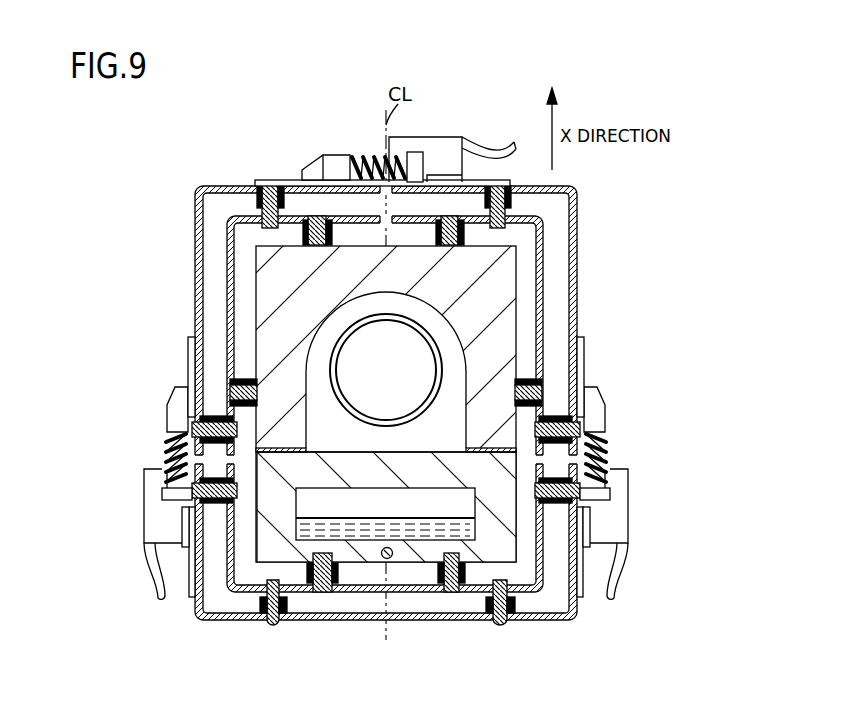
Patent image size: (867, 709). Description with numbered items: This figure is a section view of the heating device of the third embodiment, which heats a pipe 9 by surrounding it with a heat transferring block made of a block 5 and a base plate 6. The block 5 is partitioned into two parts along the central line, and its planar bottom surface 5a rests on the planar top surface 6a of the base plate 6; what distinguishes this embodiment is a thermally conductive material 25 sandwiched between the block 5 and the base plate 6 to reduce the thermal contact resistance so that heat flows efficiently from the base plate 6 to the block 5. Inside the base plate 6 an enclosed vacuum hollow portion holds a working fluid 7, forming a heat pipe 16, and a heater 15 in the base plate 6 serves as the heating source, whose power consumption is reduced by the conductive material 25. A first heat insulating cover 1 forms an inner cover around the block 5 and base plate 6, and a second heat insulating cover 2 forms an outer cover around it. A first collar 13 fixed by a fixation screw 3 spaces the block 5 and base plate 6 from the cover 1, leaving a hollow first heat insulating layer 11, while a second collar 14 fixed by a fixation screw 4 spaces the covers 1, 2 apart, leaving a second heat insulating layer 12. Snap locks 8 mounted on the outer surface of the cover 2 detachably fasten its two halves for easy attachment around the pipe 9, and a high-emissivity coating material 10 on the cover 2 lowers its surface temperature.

The first heat insulating cover 1 is at (227, 238).
The second heat insulating cover 2 is at (195, 198).
The fixation screw 3 is at (322, 218).
The fixation screw 4 is at (497, 180).
The block 5 is at (287, 262).
The bottom surface 5a is at (274, 447).
The base plate 6 is at (275, 549).
The top surface 6a is at (282, 455).
The working fluid 7 is at (350, 528).
The snap lock 8 is at (438, 147).
The pipe 9 is at (333, 372).
The coating material 10 is at (526, 186).
The first heat insulating layer 11 is at (245, 292).
The second heat insulating layer 12 is at (217, 320).
The first collar 13 is at (306, 236).
The second collar 14 is at (259, 207).
The heater 15 is at (385, 558).
The heat pipe 16 is at (308, 502).
The thermally conductive material 25 is at (488, 447).